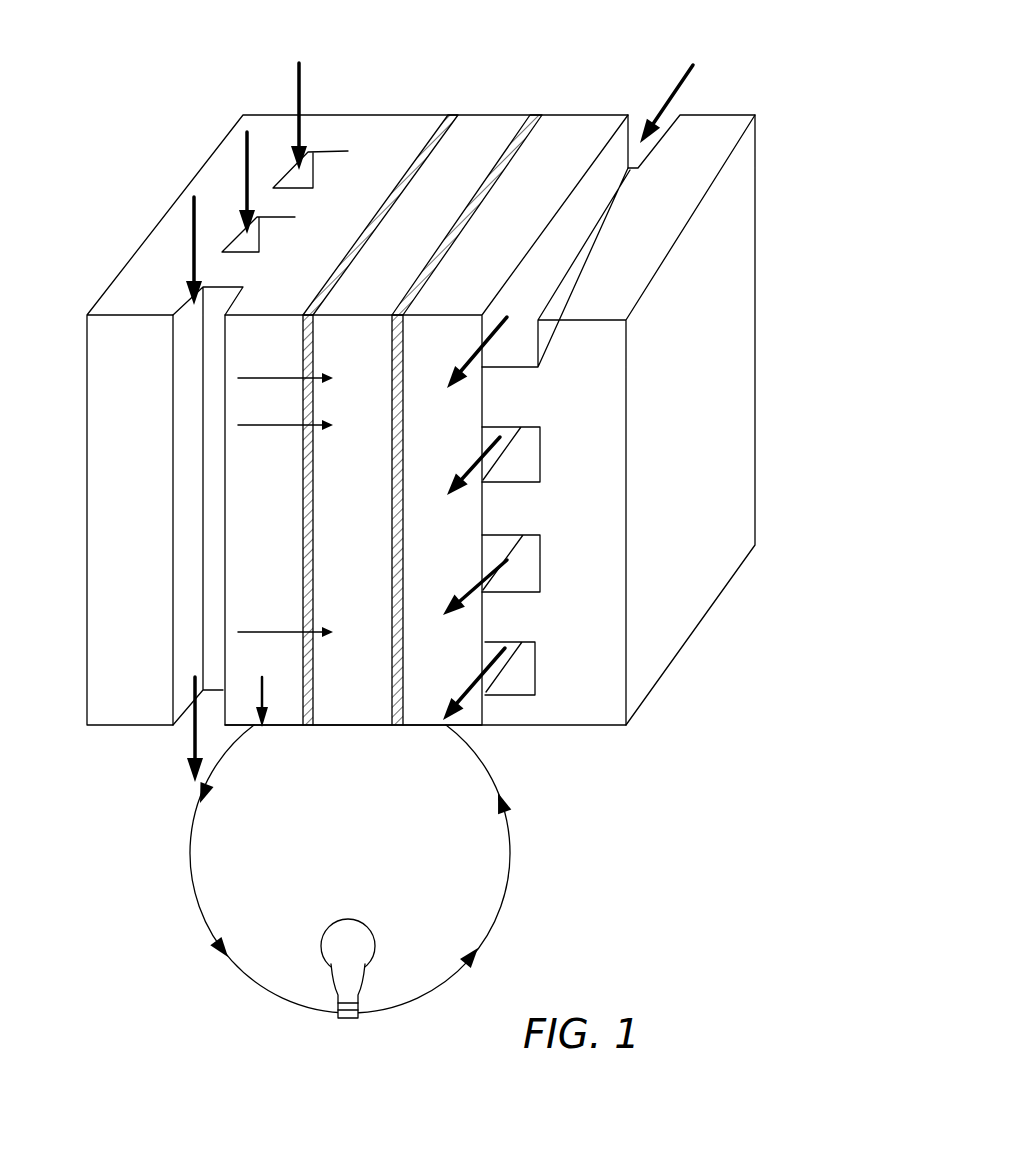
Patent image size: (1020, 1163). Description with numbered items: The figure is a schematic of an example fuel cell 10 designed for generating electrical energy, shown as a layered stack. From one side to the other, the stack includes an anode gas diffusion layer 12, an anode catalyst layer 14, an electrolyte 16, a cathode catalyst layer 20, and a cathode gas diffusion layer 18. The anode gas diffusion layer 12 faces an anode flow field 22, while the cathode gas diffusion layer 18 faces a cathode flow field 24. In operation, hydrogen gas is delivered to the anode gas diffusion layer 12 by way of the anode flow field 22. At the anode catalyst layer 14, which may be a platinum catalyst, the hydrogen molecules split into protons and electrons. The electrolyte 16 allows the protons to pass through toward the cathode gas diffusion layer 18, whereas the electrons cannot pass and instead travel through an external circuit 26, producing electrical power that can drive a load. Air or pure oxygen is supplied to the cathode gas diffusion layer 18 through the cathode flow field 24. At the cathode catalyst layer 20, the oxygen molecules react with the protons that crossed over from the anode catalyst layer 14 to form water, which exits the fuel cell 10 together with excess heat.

The fuel cell 10 is at (116, 112).
The anode gas diffusion layer 12 is at (403, 152).
The anode catalyst layer 14 is at (448, 118).
The electrolyte 16 is at (494, 154).
The cathode gas diffusion layer 18 is at (587, 154).
The cathode catalyst layer 20 is at (538, 118).
The anode flow field 22 is at (327, 162).
The cathode flow field 24 is at (525, 350).
The external circuit 26 is at (192, 877).